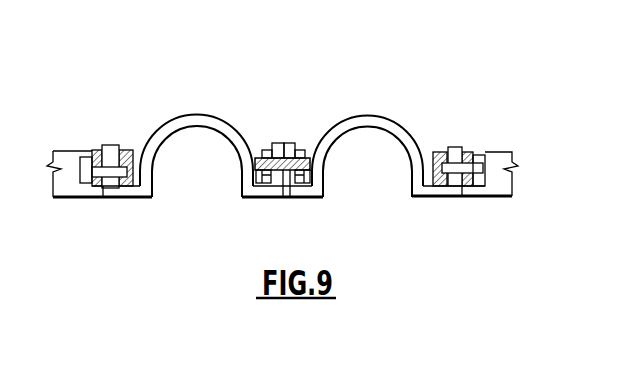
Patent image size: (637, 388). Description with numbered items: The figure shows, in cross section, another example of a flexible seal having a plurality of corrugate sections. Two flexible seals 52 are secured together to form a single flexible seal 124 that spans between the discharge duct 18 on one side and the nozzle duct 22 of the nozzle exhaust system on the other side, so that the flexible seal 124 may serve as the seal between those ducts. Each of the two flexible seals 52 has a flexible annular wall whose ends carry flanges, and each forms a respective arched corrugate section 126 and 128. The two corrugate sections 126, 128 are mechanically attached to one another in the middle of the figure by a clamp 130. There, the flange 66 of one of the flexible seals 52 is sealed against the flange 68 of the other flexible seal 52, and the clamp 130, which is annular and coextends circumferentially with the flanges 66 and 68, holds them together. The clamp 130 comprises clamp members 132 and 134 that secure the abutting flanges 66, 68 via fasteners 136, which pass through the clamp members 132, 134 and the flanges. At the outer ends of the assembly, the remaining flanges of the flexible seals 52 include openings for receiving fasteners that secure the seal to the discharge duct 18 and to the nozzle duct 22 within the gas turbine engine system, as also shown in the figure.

The discharge duct 18 is at (68, 150).
The nozzle duct 22 is at (487, 150).
The flexible seal 52 is at (272, 115).
The flexible seal 124 is at (174, 115).
The corrugate section 126 is at (206, 108).
The corrugate section 128 is at (391, 117).
The clamp 130 is at (285, 168).
The flange 68 is at (270, 150).
The flange 66 is at (297, 150).
The clamp member 132 is at (258, 183).
The clamp member 134 is at (304, 183).
The fastener 136 is at (290, 196).